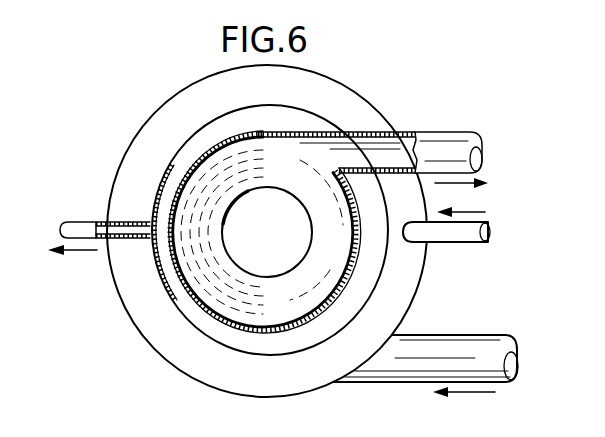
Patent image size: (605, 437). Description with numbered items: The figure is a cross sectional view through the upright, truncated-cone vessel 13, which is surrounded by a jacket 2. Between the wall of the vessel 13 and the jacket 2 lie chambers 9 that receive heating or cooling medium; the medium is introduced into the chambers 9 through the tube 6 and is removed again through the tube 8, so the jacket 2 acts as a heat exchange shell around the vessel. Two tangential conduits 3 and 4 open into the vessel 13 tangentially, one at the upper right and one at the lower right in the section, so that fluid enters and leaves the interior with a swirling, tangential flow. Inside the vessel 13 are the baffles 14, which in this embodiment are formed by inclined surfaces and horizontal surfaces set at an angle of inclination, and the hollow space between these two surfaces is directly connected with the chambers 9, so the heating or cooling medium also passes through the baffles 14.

The jacket 2 is at (335, 103).
The tangential conduit 3 is at (505, 343).
The tangential conduit 4 is at (448, 137).
The tube 6 is at (488, 225).
The tube 8 is at (73, 223).
The chamber 9 is at (163, 263).
The vessel 13 is at (201, 312).
The baffle 14 is at (306, 189).